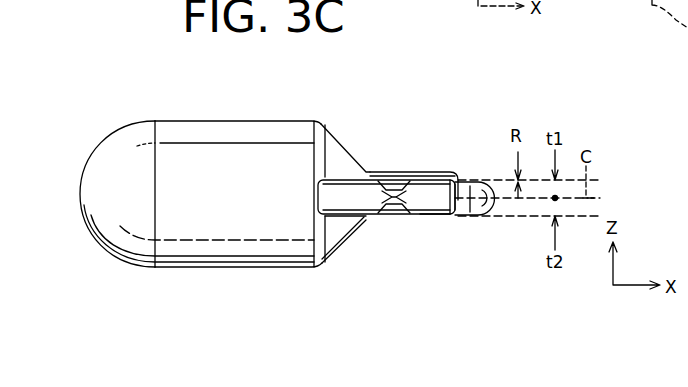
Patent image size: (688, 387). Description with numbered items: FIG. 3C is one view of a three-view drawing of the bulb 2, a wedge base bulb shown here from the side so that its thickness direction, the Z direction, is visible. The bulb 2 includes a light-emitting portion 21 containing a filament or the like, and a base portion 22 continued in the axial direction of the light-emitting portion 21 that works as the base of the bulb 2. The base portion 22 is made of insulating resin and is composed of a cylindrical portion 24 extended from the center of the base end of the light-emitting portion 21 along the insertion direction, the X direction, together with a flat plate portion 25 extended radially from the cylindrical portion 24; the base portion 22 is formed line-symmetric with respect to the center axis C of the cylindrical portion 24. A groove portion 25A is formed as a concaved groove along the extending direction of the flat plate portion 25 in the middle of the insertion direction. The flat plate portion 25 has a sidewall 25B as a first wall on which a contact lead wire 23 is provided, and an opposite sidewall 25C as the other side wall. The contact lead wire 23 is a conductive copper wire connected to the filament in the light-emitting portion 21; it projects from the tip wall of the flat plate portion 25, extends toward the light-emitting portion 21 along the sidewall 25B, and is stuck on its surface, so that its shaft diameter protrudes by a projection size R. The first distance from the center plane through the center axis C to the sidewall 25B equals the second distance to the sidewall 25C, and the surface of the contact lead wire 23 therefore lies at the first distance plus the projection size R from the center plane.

The bulb 2 is at (137, 95).
The light-emitting portion 21 is at (188, 120).
The base portion 22 is at (343, 168).
The contact lead wire 23 is at (447, 180).
The cylindrical portion 24 is at (450, 172).
The flat plate portion 25 is at (369, 190).
The groove portion 25A is at (390, 180).
The sidewall 25B is at (420, 180).
The sidewall 25C is at (436, 214).